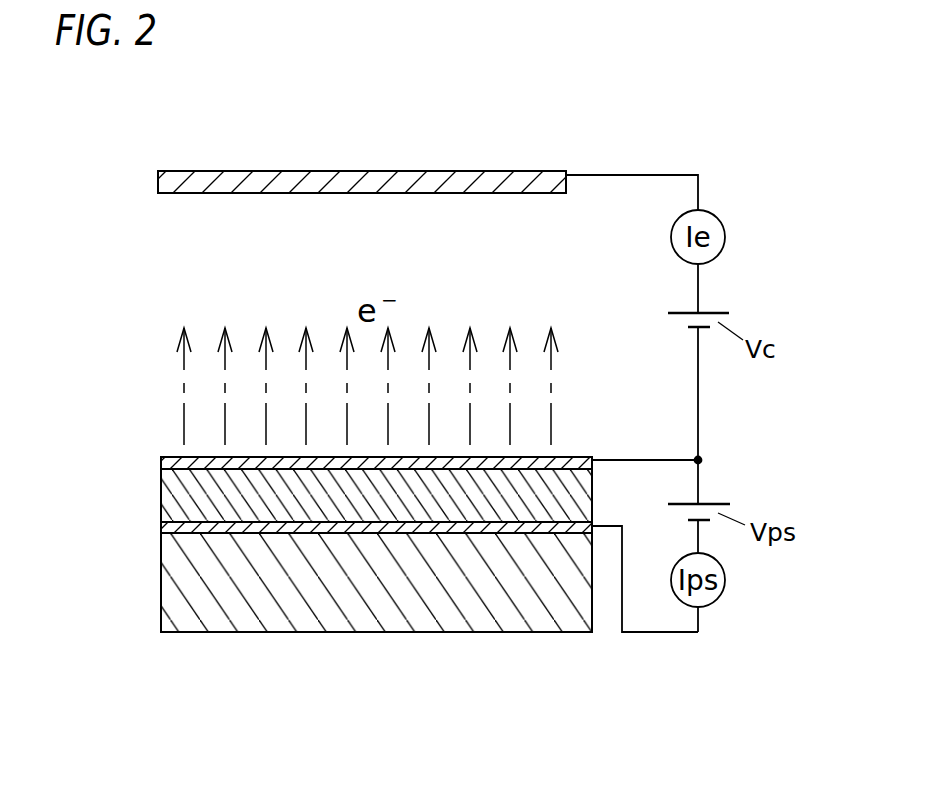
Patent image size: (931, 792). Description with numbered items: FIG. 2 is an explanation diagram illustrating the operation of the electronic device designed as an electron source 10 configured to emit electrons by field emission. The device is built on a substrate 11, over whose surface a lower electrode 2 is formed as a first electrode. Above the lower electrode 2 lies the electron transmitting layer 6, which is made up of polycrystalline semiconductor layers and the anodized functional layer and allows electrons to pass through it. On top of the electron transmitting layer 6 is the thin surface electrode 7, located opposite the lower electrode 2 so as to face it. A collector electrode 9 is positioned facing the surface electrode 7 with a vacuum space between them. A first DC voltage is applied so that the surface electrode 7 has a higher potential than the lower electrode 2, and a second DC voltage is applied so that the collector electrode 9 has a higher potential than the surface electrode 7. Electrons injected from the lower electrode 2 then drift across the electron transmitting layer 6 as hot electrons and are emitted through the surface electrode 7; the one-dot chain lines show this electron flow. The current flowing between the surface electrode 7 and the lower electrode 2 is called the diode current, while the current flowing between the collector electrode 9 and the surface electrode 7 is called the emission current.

The collector electrode 9 is at (288, 182).
The surface electrode 7 is at (578, 463).
The electron transmitting layer 6 is at (567, 493).
The lower electrode 2 is at (192, 528).
The electron source 10 is at (377, 550).
The substrate 11 is at (535, 608).